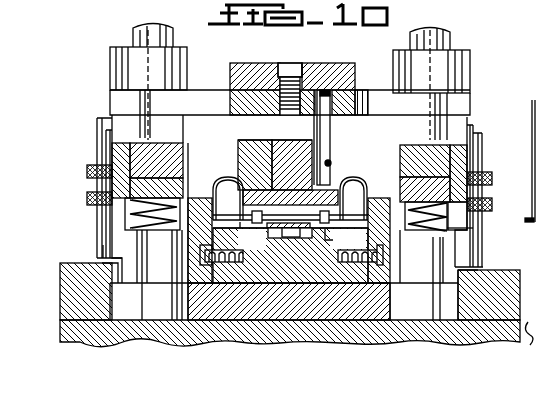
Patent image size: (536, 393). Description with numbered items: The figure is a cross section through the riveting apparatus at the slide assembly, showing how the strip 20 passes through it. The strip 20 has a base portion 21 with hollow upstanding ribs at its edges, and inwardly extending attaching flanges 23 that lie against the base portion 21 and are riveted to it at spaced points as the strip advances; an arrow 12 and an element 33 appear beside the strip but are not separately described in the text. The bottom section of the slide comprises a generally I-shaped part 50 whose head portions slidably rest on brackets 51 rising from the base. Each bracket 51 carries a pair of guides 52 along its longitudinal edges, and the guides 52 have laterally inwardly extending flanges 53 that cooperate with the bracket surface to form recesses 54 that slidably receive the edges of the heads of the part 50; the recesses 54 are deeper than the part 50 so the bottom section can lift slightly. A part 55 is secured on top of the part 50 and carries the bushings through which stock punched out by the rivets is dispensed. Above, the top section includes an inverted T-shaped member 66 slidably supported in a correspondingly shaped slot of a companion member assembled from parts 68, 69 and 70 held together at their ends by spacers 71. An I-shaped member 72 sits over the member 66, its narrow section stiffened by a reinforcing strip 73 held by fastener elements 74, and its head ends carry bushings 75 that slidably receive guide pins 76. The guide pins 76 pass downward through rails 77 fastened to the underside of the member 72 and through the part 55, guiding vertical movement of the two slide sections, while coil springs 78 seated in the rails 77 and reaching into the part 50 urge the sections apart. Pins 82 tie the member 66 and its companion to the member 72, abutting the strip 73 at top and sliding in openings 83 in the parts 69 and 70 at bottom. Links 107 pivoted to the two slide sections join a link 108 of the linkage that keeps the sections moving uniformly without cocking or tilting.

The longitudinal axis / direction arrow 12 is at (318, 62).
The strip 20 is at (243, 229).
The base portion 21 is at (372, 200).
The attaching flanges 23 is at (228, 198).
The cutting edge 33 is at (296, 220).
The I-shaped part 50 is at (352, 309).
The brackets 51 is at (128, 335).
The guides 52 is at (70, 292).
The flanges 53 is at (512, 283).
The recesses 54 is at (103, 268).
The part 55 is at (311, 265).
The member 66 is at (288, 172).
The part 68 is at (353, 198).
The part 69 is at (236, 142).
The part 70 is at (336, 160).
The spacers 71 is at (535, 195).
The member 72 is at (366, 100).
The strip 73 is at (338, 72).
The fastener elements 74 is at (229, 68).
The bushings 75 is at (112, 60).
The guide pins 76 is at (133, 40).
The rails 77 is at (103, 122).
The coil springs 78 is at (180, 202).
The pins 82 is at (318, 122).
The openings 83 is at (339, 166).
The links 107 is at (88, 170).
The link 108 is at (94, 203).